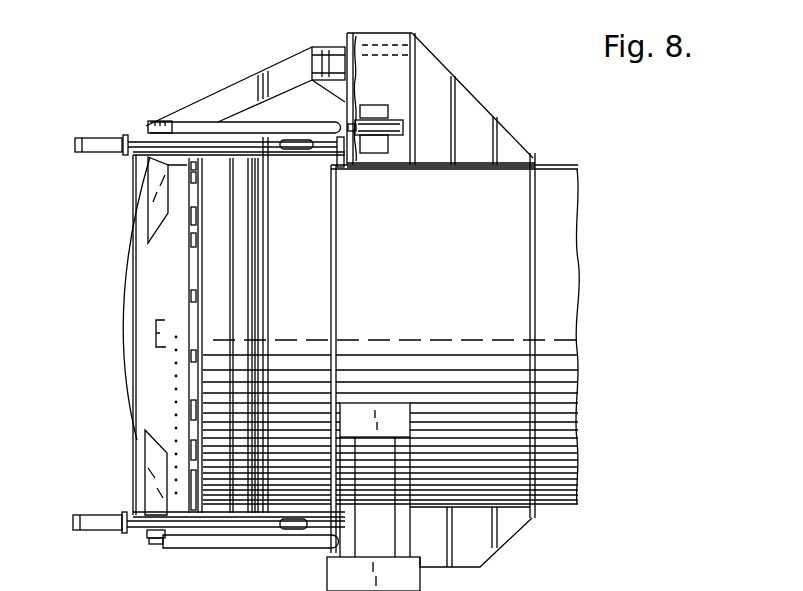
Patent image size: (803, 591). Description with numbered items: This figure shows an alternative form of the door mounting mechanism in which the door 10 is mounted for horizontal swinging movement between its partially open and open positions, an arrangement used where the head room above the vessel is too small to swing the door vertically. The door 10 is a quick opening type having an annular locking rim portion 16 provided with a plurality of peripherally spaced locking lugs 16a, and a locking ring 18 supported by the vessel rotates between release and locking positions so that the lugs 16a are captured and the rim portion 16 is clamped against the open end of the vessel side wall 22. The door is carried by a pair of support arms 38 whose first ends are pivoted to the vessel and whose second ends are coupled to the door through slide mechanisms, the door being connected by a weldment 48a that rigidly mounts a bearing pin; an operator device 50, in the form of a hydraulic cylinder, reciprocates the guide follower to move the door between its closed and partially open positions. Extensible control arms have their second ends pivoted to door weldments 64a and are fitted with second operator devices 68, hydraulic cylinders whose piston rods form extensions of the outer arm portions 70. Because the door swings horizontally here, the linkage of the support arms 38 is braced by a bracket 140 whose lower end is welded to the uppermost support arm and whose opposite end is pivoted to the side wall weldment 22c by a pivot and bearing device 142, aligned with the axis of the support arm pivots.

The door 10 is at (158, 299).
The annular locking rim portion 16 is at (194, 317).
The locking lugs 16a is at (194, 278).
The locking ring 18 is at (234, 217).
The side wall 22 is at (446, 260).
The vessel side wall weldment 22c is at (476, 98).
The support arms 38 is at (285, 150).
The door weldment 48a is at (133, 453).
The operator device 50 is at (93, 128).
The door weldments 64a is at (147, 483).
The second operator devices 68 is at (395, 112).
The outer arm portions 70 is at (318, 122).
The bracket 140 is at (222, 98).
The pivot and/or bearing device 142 is at (313, 62).